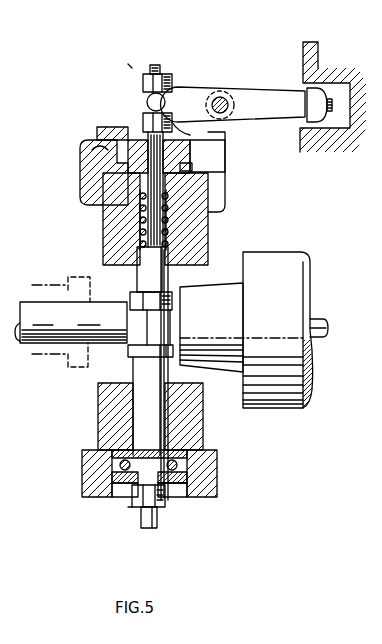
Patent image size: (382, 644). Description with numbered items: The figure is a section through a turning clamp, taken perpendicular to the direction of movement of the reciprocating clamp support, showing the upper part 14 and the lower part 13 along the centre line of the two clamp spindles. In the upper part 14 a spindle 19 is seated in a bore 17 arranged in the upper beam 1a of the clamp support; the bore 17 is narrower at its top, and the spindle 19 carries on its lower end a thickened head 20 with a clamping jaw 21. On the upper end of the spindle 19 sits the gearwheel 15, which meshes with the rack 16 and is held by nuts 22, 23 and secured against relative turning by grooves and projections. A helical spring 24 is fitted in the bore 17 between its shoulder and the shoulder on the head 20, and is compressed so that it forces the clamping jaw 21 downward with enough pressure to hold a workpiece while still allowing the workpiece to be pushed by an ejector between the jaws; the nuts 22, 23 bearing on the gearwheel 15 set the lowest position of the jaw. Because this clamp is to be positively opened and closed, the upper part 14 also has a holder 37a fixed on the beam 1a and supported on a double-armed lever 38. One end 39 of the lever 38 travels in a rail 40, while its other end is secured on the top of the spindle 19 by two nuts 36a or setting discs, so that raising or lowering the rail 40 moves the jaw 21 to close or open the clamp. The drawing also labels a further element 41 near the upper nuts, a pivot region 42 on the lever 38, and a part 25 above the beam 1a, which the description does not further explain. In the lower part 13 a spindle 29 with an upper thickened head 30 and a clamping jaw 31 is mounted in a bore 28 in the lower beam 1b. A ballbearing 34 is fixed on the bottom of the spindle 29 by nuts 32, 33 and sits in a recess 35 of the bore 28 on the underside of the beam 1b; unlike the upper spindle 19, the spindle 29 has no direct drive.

The upper part 14 is at (128, 62).
The spindle 19 is at (156, 65).
The upper lock nut 41 is at (143, 92).
The nuts 36a is at (172, 90).
The nut 22 is at (143, 120).
The double-armed lever 38 is at (218, 92).
The pivot pin 42 is at (232, 104).
The end of lever 39 is at (310, 92).
The rail 40 is at (315, 62).
The cap plate 25 is at (104, 130).
The rack 16 is at (92, 156).
The gearwheel 15 is at (192, 150).
The nut 23 is at (182, 128).
The holder 37a is at (220, 182).
The upper beam 1a is at (200, 241).
The bore 17 is at (140, 216).
The helical spring 24 is at (140, 236).
The thickened head 20 is at (140, 282).
The clamping jaw 21 is at (175, 292).
The clamping jaw 31 is at (173, 348).
The upper thickened head 30 is at (135, 368).
The bore 28 is at (135, 402).
The lower beam 1b is at (100, 424).
The recess 35 is at (100, 460).
The ballbearing 34 is at (218, 484).
The nut 33 is at (180, 492).
The nut 32 is at (165, 500).
The lower part 13 is at (126, 510).
The spindle 29 is at (152, 528).